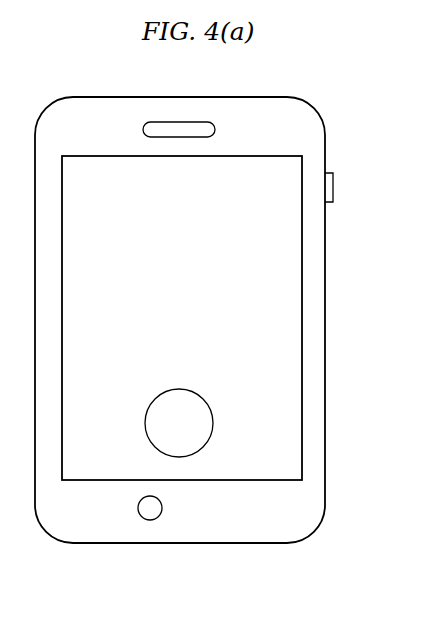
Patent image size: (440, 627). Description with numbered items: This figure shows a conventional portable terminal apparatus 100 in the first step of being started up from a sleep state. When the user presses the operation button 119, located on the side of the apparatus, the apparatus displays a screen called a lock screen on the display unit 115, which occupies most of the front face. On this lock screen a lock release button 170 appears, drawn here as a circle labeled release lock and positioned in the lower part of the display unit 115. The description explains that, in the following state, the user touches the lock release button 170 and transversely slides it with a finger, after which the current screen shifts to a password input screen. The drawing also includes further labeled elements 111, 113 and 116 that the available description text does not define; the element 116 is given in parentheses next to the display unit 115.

The portable terminal apparatus 100 is at (180, 355).
The home button / first manipulation unit 111 is at (132, 546).
The audio output unit / speaker 113 is at (185, 122).
The display unit 115 is at (233, 318).
The touch sensor 116 is at (305, 372).
The operation button 119 is at (333, 186).
The lock release button 170 is at (213, 420).